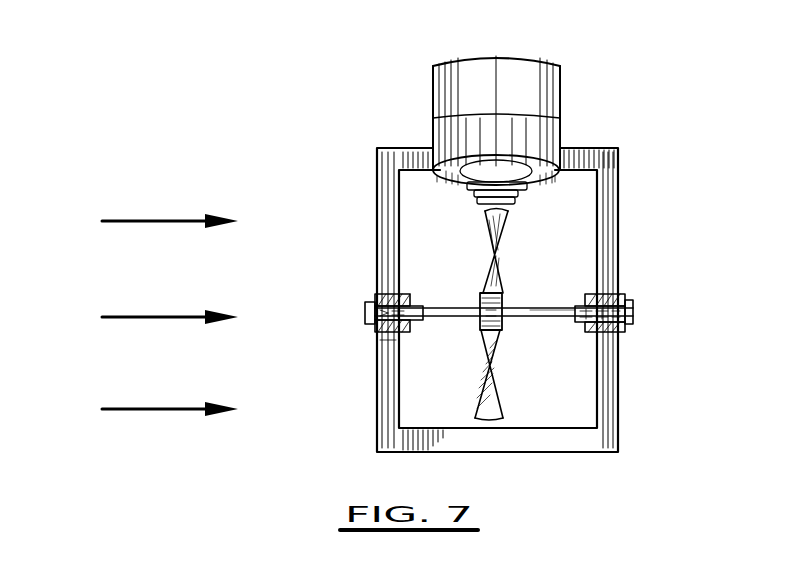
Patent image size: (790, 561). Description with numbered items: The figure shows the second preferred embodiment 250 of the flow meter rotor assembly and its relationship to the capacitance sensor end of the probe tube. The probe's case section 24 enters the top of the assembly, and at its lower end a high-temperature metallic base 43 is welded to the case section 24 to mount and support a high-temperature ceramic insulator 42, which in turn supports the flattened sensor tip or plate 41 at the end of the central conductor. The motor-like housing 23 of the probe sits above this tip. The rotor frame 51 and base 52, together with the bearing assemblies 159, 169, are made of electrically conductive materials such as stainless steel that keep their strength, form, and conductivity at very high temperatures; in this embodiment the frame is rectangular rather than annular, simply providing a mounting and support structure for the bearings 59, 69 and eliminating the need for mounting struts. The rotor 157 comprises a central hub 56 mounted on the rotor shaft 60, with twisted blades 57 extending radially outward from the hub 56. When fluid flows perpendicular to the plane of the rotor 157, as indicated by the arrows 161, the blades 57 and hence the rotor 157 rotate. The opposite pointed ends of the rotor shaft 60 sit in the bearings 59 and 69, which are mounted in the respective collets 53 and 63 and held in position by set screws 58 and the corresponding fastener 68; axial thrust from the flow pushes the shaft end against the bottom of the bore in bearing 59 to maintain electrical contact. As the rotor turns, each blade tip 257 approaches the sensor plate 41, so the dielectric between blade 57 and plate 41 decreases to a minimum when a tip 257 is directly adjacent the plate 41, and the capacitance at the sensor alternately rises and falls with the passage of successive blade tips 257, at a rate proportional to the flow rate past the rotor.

The motor 23 is at (562, 82).
The case section 24 is at (437, 170).
The plate 41 is at (478, 201).
The ceramic insulator 42 is at (474, 193).
The metallic base 43 is at (467, 184).
The rotor frame 51 is at (590, 148).
The base 52 is at (562, 138).
The collet 53 is at (610, 294).
The hub 56 is at (504, 306).
The blades 57 is at (505, 248).
The set screws 58 is at (618, 333).
The bearing 59 is at (634, 318).
The rotor shaft 60 is at (555, 320).
The collet 63 is at (388, 345).
The left bearing lower flange 68 is at (376, 331).
The bearing 69 is at (368, 312).
The rotor 157 is at (476, 369).
The bearing assembly 159 is at (640, 304).
The arrows 161 is at (156, 315).
The bearing assembly 169 is at (370, 290).
The second preferred embodiment 250 is at (428, 128).
The blade tips 257 is at (495, 418).